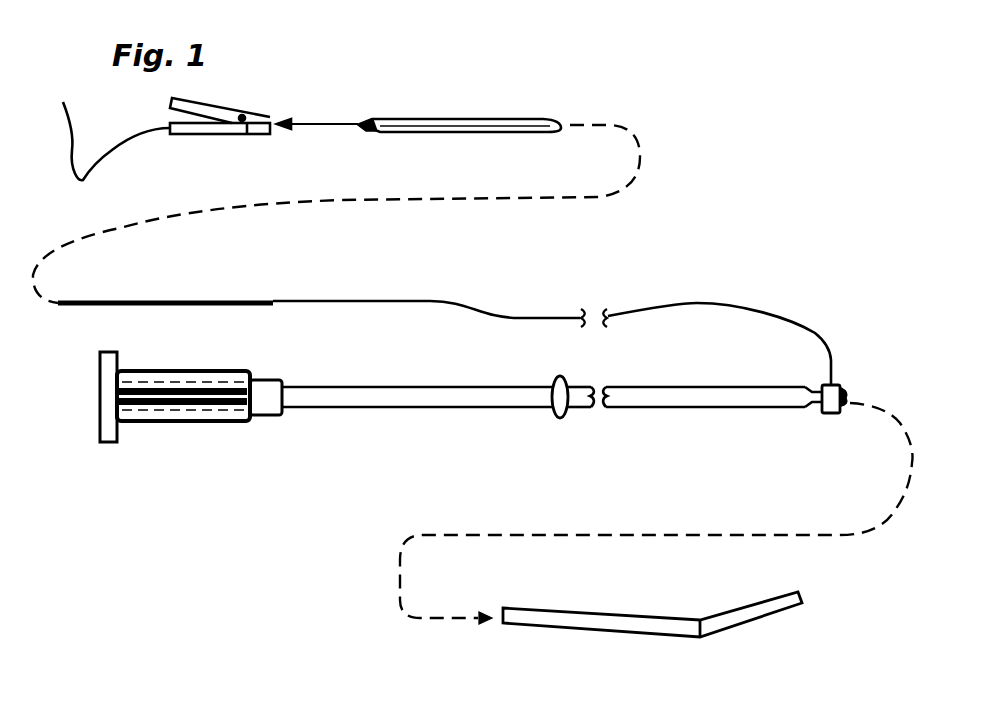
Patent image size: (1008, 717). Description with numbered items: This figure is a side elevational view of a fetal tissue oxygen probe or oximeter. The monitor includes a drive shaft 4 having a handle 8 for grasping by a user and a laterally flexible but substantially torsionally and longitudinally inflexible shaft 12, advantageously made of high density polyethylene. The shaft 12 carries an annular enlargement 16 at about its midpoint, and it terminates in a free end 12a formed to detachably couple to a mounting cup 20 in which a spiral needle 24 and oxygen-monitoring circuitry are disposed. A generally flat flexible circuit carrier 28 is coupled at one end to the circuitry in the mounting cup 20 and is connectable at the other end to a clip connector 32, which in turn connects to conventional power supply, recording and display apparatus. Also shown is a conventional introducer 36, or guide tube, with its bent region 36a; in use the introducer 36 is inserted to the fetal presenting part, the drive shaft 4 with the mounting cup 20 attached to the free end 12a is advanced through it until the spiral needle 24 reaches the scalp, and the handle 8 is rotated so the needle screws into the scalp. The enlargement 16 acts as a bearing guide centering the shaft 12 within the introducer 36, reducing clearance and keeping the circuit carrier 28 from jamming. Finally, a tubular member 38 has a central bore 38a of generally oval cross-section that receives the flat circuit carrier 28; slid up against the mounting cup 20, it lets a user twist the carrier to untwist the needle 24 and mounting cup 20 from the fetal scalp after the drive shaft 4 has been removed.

The drive shaft 4 is at (502, 401).
The handle 8 is at (187, 423).
The shaft 12 is at (443, 402).
The free end 12a is at (813, 408).
The annular enlargement 16 is at (560, 418).
The mounting cup 20 is at (842, 420).
The spiral needle 24 is at (847, 395).
The flexible circuit carrier 28 is at (336, 290).
The clip connector 32 is at (257, 112).
The introducer 36 is at (593, 630).
The bend of blade 36a is at (698, 620).
The tubular member 38 is at (498, 118).
The central bore 38a is at (364, 121).